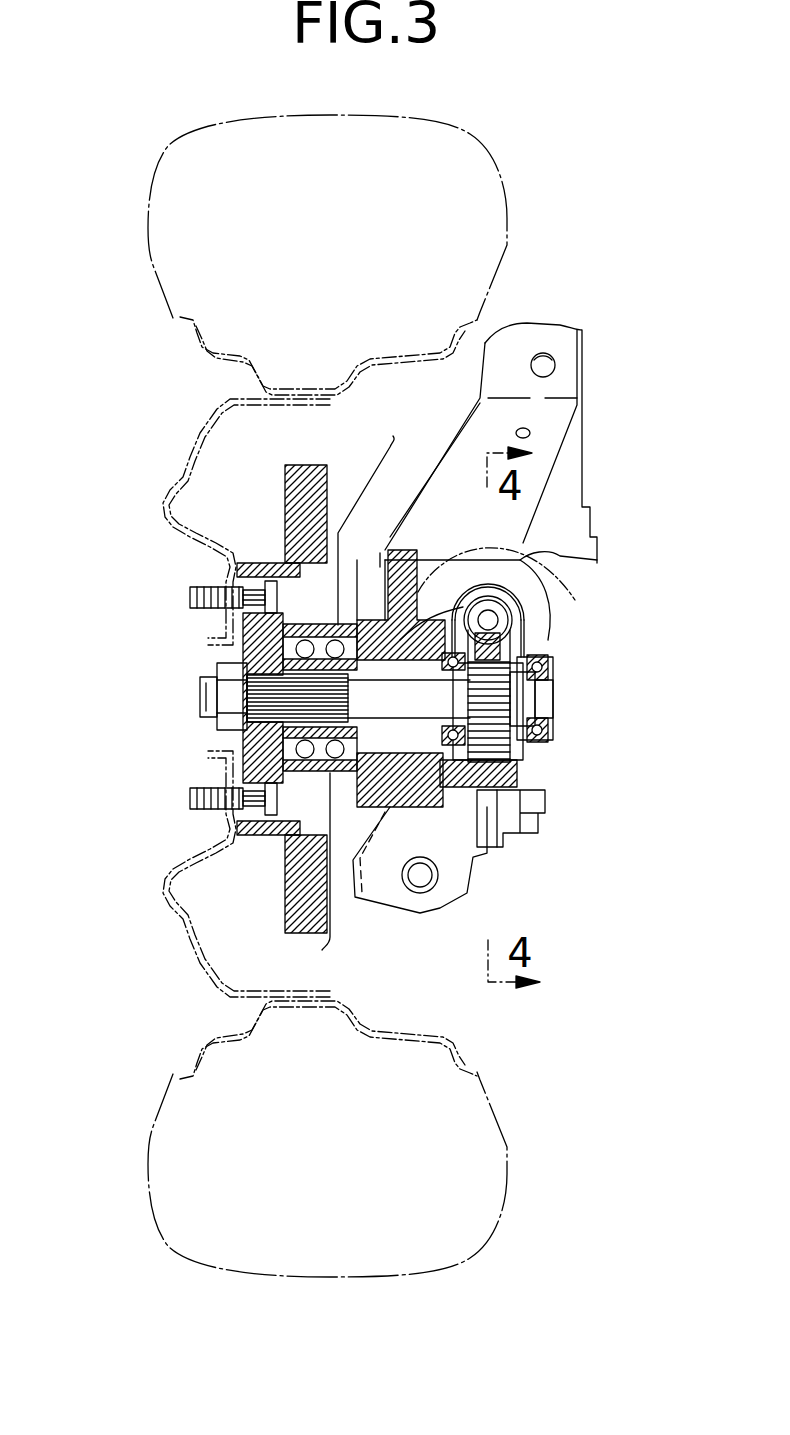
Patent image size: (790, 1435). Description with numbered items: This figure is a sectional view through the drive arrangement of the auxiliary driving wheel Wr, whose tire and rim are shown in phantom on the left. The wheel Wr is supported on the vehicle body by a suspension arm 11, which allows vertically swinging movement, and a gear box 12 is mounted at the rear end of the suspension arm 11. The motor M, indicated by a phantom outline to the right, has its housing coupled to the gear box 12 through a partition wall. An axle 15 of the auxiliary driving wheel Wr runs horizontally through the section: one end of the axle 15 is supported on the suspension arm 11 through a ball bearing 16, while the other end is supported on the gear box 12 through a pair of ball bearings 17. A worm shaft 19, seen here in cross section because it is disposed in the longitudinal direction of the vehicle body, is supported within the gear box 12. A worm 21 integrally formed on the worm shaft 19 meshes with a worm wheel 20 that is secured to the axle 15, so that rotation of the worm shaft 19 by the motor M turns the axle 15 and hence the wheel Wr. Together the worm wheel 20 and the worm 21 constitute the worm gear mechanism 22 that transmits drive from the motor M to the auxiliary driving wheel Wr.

The auxiliary driving wheel Wr is at (153, 277).
The suspension arm 11 is at (457, 457).
The gear box 12 is at (530, 640).
The axle 15 is at (390, 687).
The ball bearing 16 is at (310, 752).
The pair of ball bearings 17 is at (452, 672).
The worm shaft 19 is at (488, 620).
The worm wheel 20 is at (495, 745).
The worm 21 is at (488, 596).
The worm gear mechanism 22 is at (466, 600).
The motor M is at (558, 594).